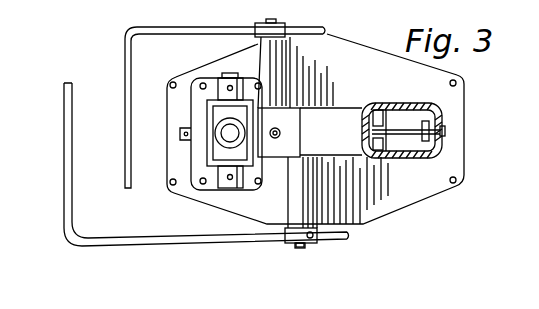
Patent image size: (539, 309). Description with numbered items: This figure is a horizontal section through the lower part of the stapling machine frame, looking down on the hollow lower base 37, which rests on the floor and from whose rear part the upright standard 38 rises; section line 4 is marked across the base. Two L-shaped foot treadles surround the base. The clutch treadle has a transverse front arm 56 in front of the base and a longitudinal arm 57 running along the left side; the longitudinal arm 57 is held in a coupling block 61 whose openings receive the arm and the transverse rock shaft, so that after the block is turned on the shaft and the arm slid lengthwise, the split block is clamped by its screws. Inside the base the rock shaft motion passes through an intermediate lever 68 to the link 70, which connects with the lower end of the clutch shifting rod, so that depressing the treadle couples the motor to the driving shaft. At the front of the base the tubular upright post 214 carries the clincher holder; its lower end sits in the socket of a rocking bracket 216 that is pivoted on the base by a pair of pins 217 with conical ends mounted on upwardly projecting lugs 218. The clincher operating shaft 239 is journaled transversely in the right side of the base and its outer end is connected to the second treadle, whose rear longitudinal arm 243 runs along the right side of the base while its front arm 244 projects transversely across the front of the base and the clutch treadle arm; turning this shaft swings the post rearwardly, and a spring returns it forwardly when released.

The section line 4- 4 is at (143, 156).
The lower base 37 is at (315, 129).
The upright standard 38 is at (386, 108).
The transverse front arm 56 is at (125, 109).
The longitudinal arm 57 is at (306, 28).
The coupling block 61 is at (279, 25).
The adjusting bolt 68 is at (402, 158).
The link 70 is at (446, 132).
The upright post 214 is at (214, 143).
The rocking bracket 216 is at (226, 111).
The pins 217 is at (233, 79).
The lugs 218 is at (241, 183).
The clincher operating shaft 239 is at (302, 249).
The rear longitudinal arm 243 is at (190, 245).
The front arm 244 is at (64, 181).